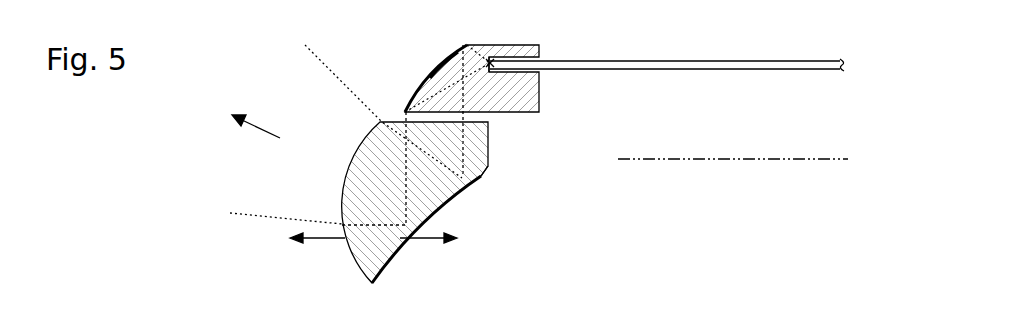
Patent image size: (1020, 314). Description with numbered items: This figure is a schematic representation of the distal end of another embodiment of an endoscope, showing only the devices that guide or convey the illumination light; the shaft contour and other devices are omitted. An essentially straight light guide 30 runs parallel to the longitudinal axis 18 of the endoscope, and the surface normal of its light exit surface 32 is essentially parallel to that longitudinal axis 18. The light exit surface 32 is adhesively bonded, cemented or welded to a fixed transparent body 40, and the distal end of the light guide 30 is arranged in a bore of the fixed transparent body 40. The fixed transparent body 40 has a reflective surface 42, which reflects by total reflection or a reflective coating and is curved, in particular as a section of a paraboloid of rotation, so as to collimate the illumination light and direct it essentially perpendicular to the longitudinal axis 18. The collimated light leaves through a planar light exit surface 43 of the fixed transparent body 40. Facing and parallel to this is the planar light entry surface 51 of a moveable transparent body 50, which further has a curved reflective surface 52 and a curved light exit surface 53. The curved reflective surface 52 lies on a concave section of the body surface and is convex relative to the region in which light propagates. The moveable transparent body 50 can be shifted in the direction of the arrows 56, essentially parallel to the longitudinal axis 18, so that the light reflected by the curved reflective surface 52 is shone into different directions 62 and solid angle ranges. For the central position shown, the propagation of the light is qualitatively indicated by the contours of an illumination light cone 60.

The longitudinal axis 18 is at (714, 158).
The light guide 30 is at (618, 70).
The light exit surface 32 is at (497, 66).
The fixed transparent body 40 is at (528, 112).
The reflective surface 42 is at (450, 62).
The light exit surface 43 is at (414, 113).
The moveable transparent body 50 is at (452, 190).
The light entry surface 51 is at (383, 120).
The curved reflective surface 52 is at (488, 167).
The light exit surface 53 is at (345, 242).
The arrows 56 is at (430, 250).
The illumination light cone 60 is at (253, 214).
The directions 62 is at (262, 127).